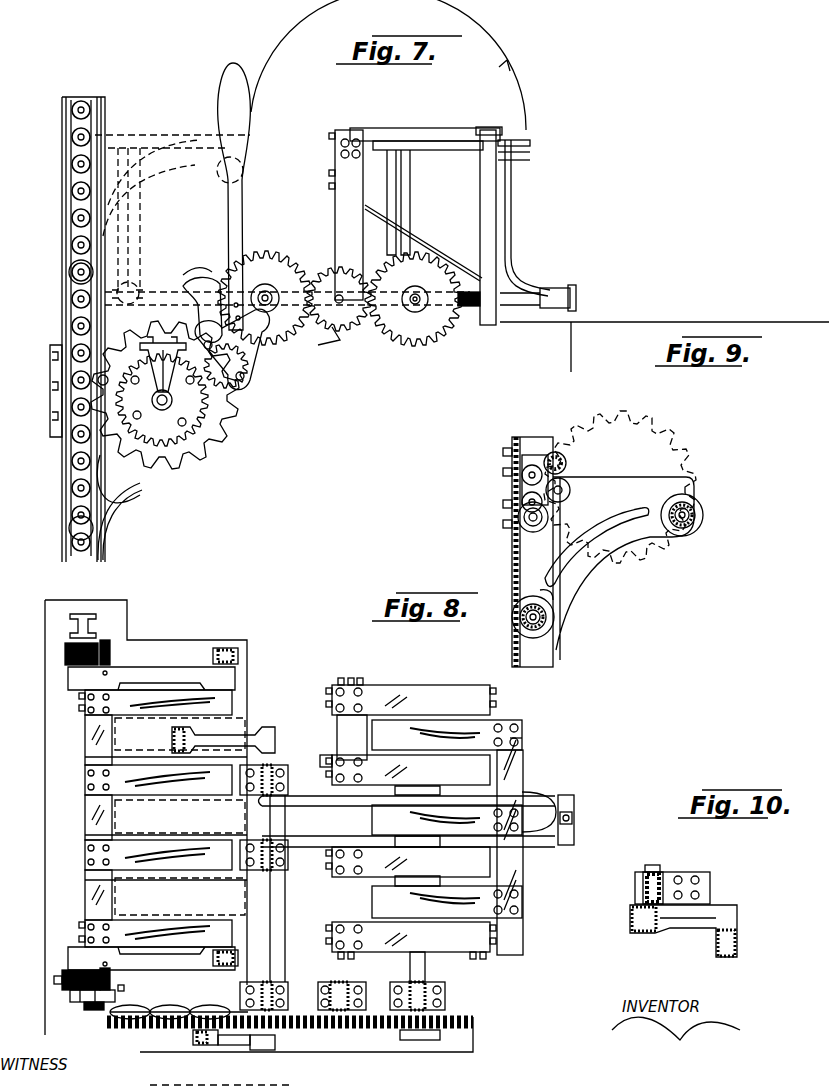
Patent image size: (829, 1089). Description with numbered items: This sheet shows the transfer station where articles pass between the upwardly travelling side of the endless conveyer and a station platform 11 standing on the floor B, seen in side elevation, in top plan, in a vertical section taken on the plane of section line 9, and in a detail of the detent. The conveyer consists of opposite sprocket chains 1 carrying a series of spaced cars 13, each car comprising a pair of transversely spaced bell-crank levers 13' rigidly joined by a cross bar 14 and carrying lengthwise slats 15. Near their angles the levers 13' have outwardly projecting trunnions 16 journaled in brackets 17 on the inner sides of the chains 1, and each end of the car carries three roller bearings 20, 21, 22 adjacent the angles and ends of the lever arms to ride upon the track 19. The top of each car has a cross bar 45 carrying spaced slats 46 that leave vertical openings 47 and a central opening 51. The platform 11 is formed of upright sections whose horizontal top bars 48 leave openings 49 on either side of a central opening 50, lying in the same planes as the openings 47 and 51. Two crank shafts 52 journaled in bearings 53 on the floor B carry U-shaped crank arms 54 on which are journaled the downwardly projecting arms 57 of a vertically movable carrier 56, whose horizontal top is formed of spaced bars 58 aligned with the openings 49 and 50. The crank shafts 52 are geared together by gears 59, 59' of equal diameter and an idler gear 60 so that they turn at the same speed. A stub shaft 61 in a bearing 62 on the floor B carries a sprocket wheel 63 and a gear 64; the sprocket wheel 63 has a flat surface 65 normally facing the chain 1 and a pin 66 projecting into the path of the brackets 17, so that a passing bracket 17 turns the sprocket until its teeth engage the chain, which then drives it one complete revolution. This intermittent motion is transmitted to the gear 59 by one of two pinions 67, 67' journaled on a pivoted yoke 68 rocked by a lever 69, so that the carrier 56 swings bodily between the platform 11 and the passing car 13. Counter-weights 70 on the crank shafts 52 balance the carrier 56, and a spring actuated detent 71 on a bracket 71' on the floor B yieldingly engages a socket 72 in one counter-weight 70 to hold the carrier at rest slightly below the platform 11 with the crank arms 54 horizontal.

In FIG. 7, the sprocket chain 1 is at (76, 212).
In FIG. 9, the sprocket chain 1 is at (522, 463).
In FIG. 8, the sprocket chain 1 is at (72, 615).
In FIG. 8, the section line 9 is at (40, 996).
In FIG. 7, the station platform 11 is at (375, 128).
In FIG. 8, the station platform 11 is at (358, 728).
In FIG. 8, the car 13 is at (155, 659).
In FIG. 7, the bell-crank lever 13' is at (172, 212).
In FIG. 9, the bell-crank lever 13' is at (619, 557).
In FIG. 8, the bell-crank lever 13' is at (151, 796).
In FIG. 8, the cross bar 14 is at (92, 733).
In FIG. 8, the lengthwise slat 15 is at (150, 793).
In FIG. 9, the pivotal trunnion 16 is at (567, 483).
In FIG. 8, the pivotal trunnion 16 is at (124, 815).
In FIG. 9, the bracket 17 is at (567, 500).
In FIG. 8, the bracket 17 is at (92, 635).
In FIG. 7, the track 19 is at (62, 297).
In FIG. 9, the track 19 is at (518, 574).
In FIG. 8, the track 19 is at (65, 653).
In FIG. 7, the roller bearing 20 is at (120, 241).
In FIG. 9, the roller bearing 20 is at (518, 518).
In FIG. 8, the roller bearing 20 is at (64, 658).
In FIG. 7, the roller bearing 21 is at (68, 270).
In FIG. 9, the roller bearing 21 is at (520, 624).
In FIG. 7, the roller bearing 22 is at (244, 170).
In FIG. 9, the roller bearing 22 is at (698, 516).
In FIG. 8, the roller bearing 22 is at (224, 647).
In FIG. 8, the cross bar 45 is at (90, 810).
In FIG. 8, the slat 46 is at (148, 710).
In FIG. 8, the vertical opening 47 is at (118, 757).
In FIG. 8, the horizontal top bar 48 is at (411, 818).
In FIG. 8, the opening 49 is at (404, 720).
In FIG. 8, the central opening 50 is at (532, 854).
In FIG. 8, the central opening 51 is at (118, 835).
In FIG. 7, the crank shaft 52 is at (268, 294).
In FIG. 8, the crank shaft 52 is at (280, 930).
In FIG. 10, the crank shaft 52 is at (728, 958).
In FIG. 8, the bearing 53 is at (262, 800).
In FIG. 7, the crank arm 54 is at (516, 318).
In FIG. 8, the crank arm 54 is at (352, 806).
In FIG. 7, the carrier 56 is at (518, 160).
In FIG. 8, the carrier 56 is at (516, 740).
In FIG. 7, the downwardly projecting arm 57 is at (140, 230).
In FIG. 8, the downwardly projecting arm 57 is at (576, 815).
In FIG. 8, the bar 58 is at (447, 819).
In FIG. 7, the gear 59 is at (265, 283).
In FIG. 8, the gear 59 is at (290, 1049).
In FIG. 7, the gear 59' is at (415, 307).
In FIG. 8, the gear 59' is at (427, 1056).
In FIG. 7, the idler gear 60 is at (334, 275).
In FIG. 8, the idler gear 60 is at (352, 1034).
In FIG. 7, the stub shaft 61 is at (162, 400).
In FIG. 7, the bearing 62 is at (168, 373).
In FIG. 7, the sprocket wheel 63 is at (228, 442).
In FIG. 9, the sprocket wheel 63 is at (690, 456).
In FIG. 8, the sprocket wheel 63 is at (192, 1008).
In FIG. 7, the gear 64 is at (152, 466).
In FIG. 8, the gear 64 is at (130, 1030).
In FIG. 7, the flat surface 65 is at (90, 415).
In FIG. 7, the pin 66 is at (97, 380).
In FIG. 9, the pin 66 is at (562, 458).
In FIG. 8, the pin 66 is at (96, 1010).
In FIG. 7, the pinion 67 is at (201, 309).
In FIG. 8, the pinion 67 is at (205, 1056).
In FIG. 7, the pinion 67' is at (244, 380).
In FIG. 7, the yoke 68 is at (268, 345).
In FIG. 8, the yoke 68 is at (236, 1046).
In FIG. 7, the lever 69 is at (236, 110).
In FIG. 8, the lever 69 is at (266, 1050).
In FIG. 7, the counter-weight 70 is at (185, 272).
In FIG. 8, the counter-weight 70 is at (190, 737).
In FIG. 10, the counter-weight 70 is at (688, 930).
In FIG. 10, the spring actuated detent 71 is at (631, 888).
In FIG. 10, the bracket 71' is at (672, 876).
In FIG. 10, the socket 72 is at (650, 931).
In FIG. 7, the floor B is at (600, 345).